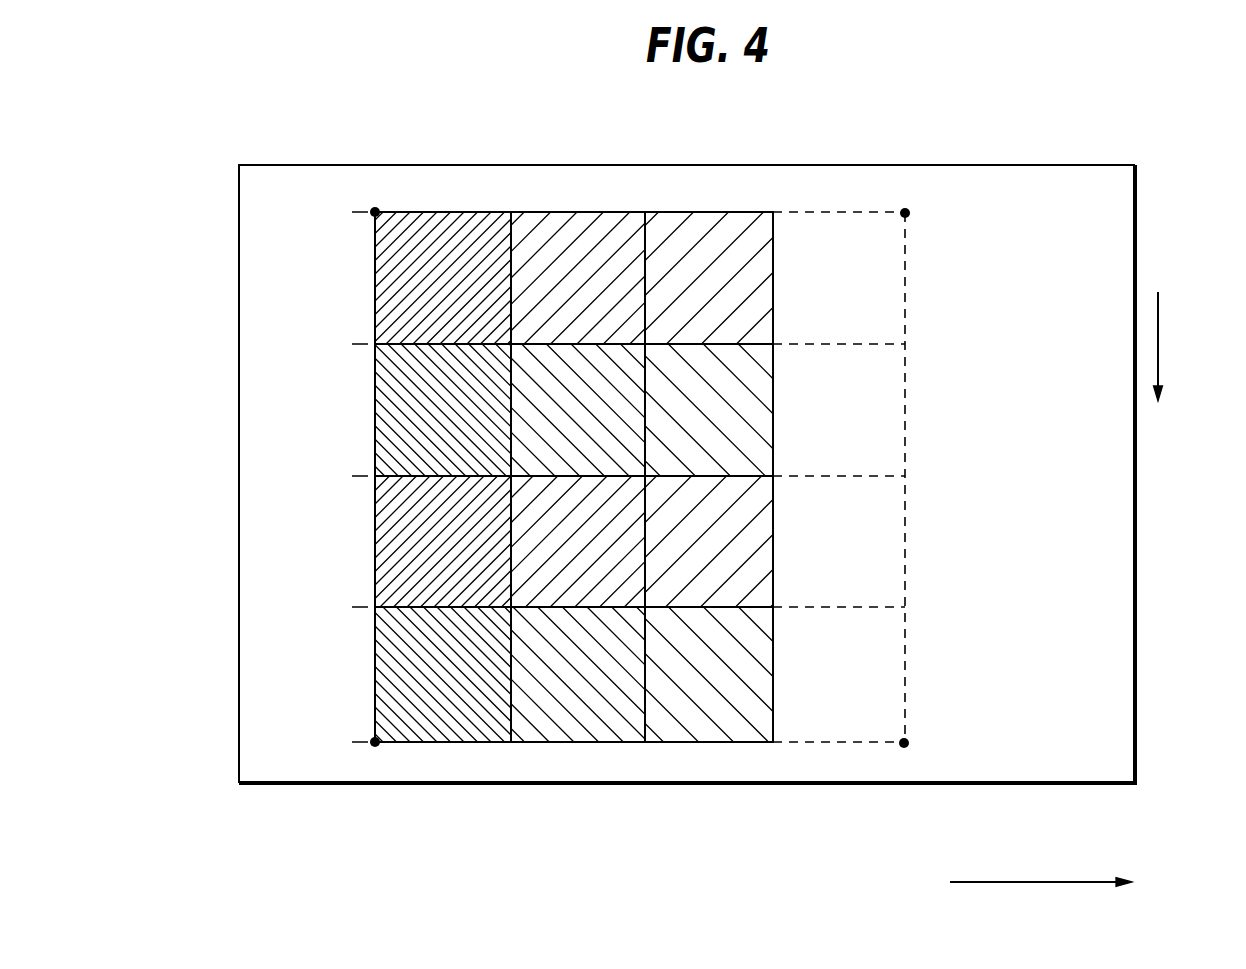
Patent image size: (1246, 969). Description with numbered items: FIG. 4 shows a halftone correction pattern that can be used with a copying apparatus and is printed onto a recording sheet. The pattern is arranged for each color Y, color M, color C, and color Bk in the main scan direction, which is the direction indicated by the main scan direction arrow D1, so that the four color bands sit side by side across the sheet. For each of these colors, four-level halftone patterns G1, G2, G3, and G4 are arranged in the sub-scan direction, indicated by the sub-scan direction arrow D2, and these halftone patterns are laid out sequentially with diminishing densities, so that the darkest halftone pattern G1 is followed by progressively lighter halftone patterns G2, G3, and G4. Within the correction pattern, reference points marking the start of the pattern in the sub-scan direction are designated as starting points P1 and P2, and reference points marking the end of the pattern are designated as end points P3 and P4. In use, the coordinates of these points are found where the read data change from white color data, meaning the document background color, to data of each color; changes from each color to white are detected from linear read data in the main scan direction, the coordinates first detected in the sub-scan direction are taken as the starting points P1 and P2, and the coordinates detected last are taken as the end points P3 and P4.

The starting point P1 is at (376, 209).
The starting point P2 is at (375, 745).
The end point P3 is at (905, 210).
The end point P4 is at (904, 746).
The halftone pattern G1 is at (443, 496).
The halftone pattern G2 is at (578, 496).
The halftone pattern G3 is at (709, 496).
The halftone pattern G4 is at (839, 496).
The color Y is at (368, 273).
The color M is at (368, 409).
The color C is at (368, 534).
The color Bk is at (368, 663).
The main scan direction arrow D1 is at (1187, 346).
The sub-scan direction arrow D2 is at (1041, 902).